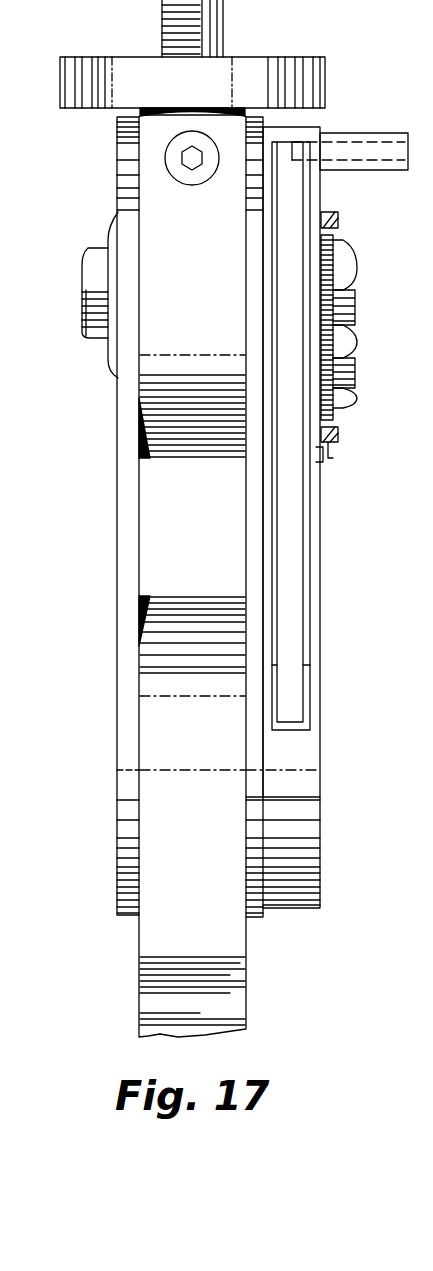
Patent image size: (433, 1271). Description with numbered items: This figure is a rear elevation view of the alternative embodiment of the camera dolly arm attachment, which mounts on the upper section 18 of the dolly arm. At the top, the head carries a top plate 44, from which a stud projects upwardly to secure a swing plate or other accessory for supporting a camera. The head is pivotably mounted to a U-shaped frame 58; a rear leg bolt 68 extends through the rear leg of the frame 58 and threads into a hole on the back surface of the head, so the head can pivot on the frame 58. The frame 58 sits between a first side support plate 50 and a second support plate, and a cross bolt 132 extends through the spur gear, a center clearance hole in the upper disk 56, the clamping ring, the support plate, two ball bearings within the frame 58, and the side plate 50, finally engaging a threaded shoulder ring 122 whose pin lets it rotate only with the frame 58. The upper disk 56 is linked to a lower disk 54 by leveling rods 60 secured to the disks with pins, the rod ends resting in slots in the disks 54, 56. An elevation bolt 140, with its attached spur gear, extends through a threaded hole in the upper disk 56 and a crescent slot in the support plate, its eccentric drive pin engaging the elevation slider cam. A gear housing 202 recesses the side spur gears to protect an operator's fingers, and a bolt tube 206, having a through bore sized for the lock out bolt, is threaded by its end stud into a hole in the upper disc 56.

The upper section 18 is at (168, 818).
The top plate 44 is at (248, 70).
The first side support plate 50 is at (125, 507).
The lower disk 54 is at (303, 792).
The upper disk 56 is at (312, 180).
The U-shaped frame 58 is at (160, 403).
The leveling rods 60 is at (293, 552).
The rear leg bolt 68 is at (195, 171).
The threaded shoulder ring 122 is at (358, 262).
The cross bolt 132 is at (80, 287).
The elevation bolt 140 is at (356, 385).
The gear housing 202 is at (329, 448).
The bolt tube 206 is at (368, 133).